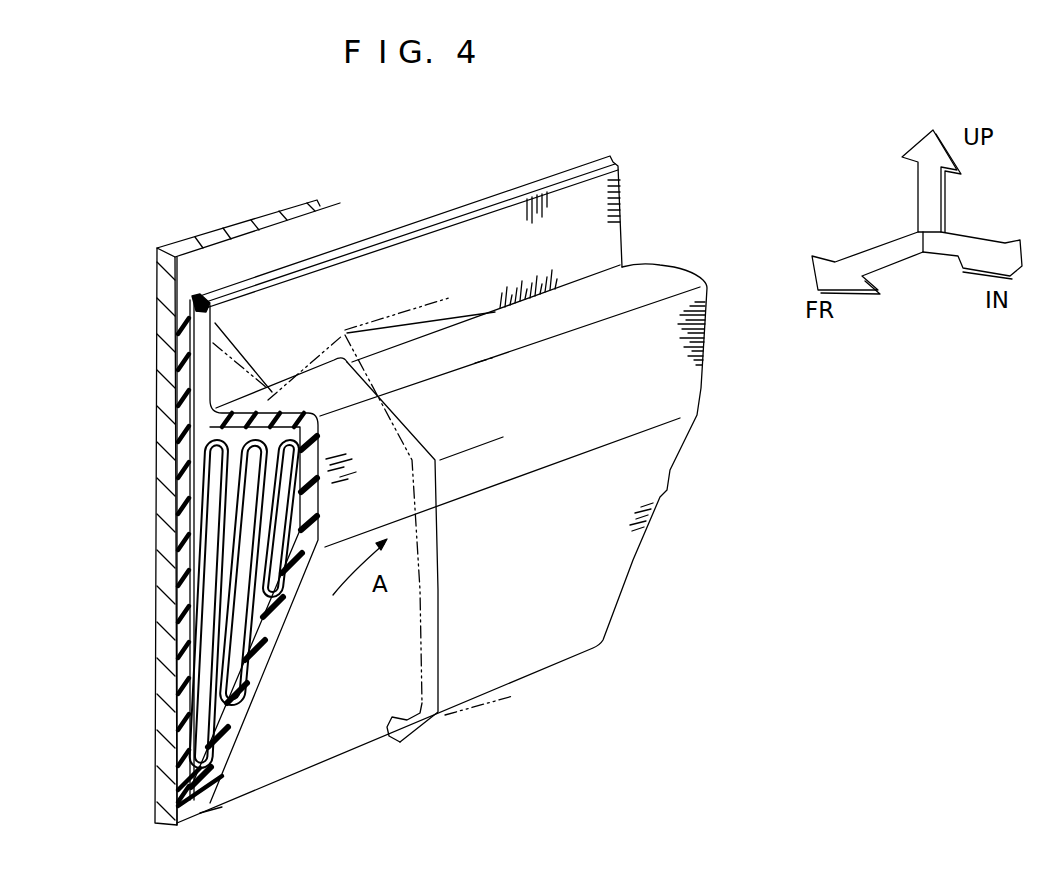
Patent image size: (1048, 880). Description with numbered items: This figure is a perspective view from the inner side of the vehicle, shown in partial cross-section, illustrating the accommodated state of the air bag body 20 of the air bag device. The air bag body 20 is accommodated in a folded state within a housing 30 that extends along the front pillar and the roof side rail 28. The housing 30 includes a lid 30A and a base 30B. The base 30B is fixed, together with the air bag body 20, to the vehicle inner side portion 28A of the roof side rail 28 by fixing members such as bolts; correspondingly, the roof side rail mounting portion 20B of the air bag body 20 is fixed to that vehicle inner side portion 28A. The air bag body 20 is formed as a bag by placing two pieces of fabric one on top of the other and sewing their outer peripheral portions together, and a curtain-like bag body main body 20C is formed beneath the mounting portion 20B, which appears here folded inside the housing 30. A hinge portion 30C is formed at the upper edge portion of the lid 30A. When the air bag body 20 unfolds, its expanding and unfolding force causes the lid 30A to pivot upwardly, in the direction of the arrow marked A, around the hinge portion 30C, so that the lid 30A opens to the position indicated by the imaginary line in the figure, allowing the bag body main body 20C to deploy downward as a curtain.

The roof side rail 28 is at (196, 236).
The vehicle inner side portion of the roof side rail 28A is at (253, 253).
The housing 30 is at (508, 176).
The lid 30A is at (478, 722).
The base 30B is at (170, 616).
The hinge portion 30C is at (420, 226).
The air bag body 20 is at (250, 624).
The roof side rail mounting portion 20B is at (176, 370).
The bag body main body 20C is at (248, 657).